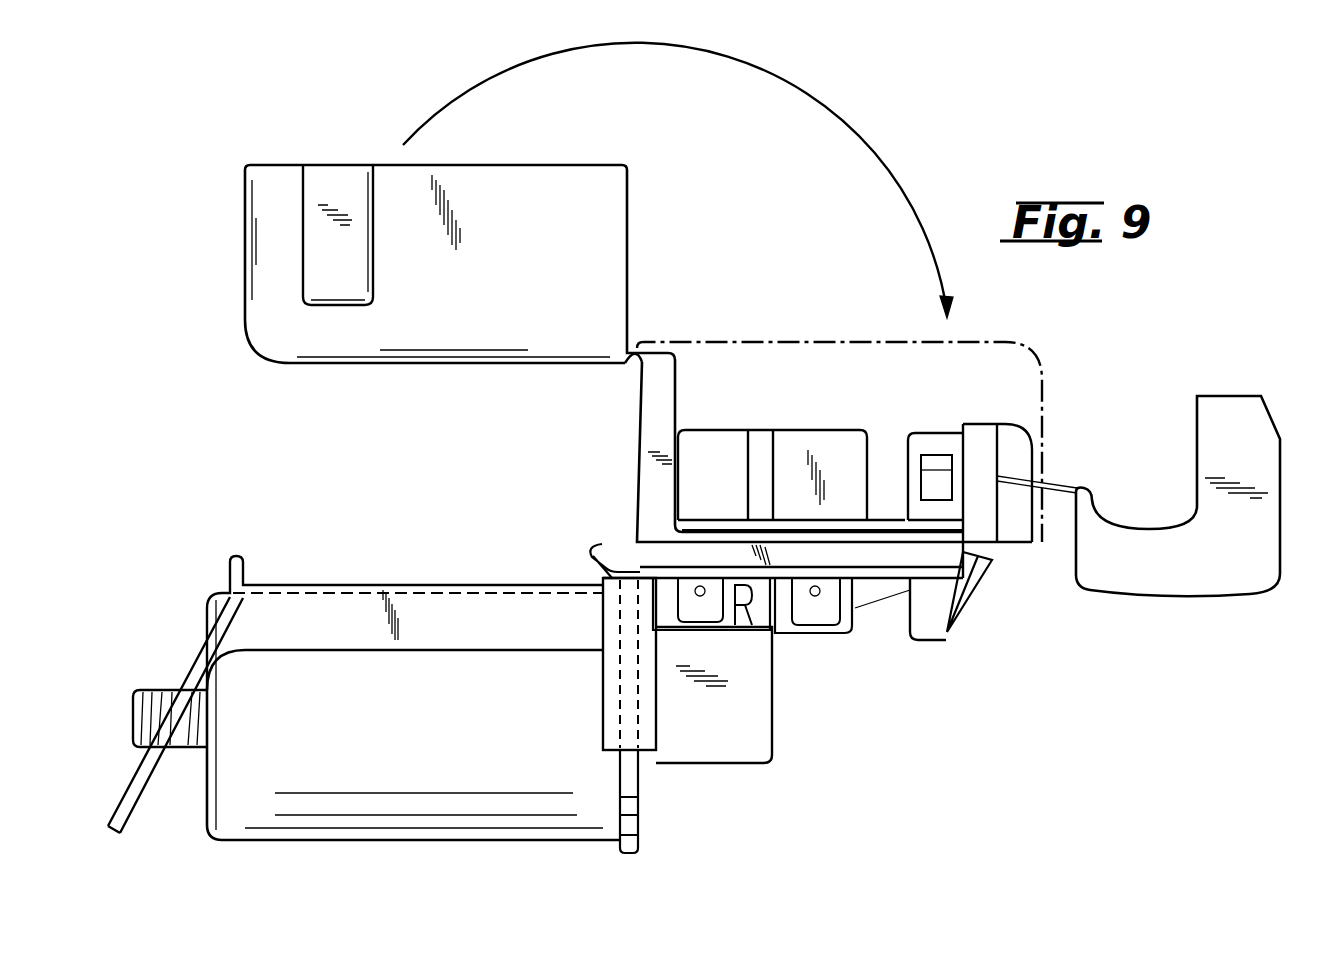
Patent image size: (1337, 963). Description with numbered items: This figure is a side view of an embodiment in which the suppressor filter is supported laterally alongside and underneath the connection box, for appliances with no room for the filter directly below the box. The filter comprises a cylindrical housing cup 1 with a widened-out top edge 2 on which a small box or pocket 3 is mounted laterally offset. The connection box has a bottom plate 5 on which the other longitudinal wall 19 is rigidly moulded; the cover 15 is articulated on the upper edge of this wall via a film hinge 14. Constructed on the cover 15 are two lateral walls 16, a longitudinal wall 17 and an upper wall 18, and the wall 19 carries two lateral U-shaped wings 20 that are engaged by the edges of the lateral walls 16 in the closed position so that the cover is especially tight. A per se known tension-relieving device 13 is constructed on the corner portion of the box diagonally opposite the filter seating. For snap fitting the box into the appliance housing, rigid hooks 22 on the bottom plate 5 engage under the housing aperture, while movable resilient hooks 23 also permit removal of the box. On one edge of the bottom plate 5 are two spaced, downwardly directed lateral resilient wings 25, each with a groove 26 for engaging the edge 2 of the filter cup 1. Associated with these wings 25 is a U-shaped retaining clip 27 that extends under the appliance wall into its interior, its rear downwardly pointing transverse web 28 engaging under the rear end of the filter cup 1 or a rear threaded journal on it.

The cylindrical housing cup 1 is at (432, 823).
The widened-out top edge 2 is at (625, 806).
The small box or pocket 3 is at (752, 745).
The bottom plate 5 is at (890, 560).
The tension-relieving device 13 is at (1220, 578).
The film hinge 14 is at (636, 362).
The cover 15 is at (351, 372).
The lateral walls 16 is at (552, 192).
The longitudinal wall 17 is at (243, 237).
The upper wall 18 is at (423, 366).
The other longitudinal wall 19 is at (642, 435).
The lateral U-shaped wings 20 is at (662, 395).
The rigid hooks 22 is at (602, 550).
The movable resilient hooks 23 is at (990, 570).
The lateral resilient wings 25 is at (607, 697).
The groove 26 is at (622, 721).
The U-shaped retaining clip 27 is at (338, 606).
The transverse web 28 is at (126, 792).